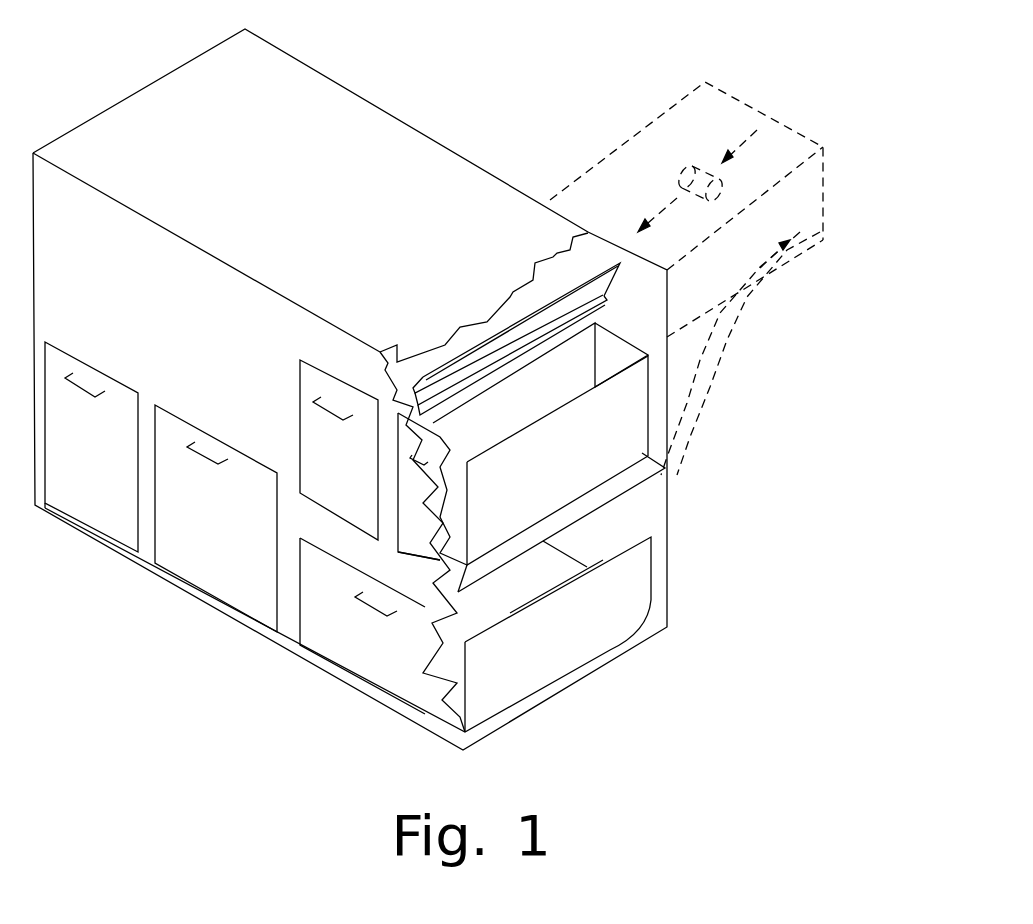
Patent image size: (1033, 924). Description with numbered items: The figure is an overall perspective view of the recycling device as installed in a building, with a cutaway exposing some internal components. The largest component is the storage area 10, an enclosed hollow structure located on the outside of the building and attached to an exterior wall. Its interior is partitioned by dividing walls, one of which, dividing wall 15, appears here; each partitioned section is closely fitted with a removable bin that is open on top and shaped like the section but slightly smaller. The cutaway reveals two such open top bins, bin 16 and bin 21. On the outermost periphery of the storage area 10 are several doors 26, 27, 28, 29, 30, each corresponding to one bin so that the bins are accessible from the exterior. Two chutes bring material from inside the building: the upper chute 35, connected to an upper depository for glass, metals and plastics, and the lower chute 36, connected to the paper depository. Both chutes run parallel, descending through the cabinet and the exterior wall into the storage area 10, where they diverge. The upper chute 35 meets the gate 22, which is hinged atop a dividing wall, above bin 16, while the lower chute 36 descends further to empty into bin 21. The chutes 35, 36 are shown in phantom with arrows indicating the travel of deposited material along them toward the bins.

The storage area 10 is at (267, 145).
The dividing wall 15 is at (638, 472).
The open top bin 16 is at (592, 440).
The open top bin 21 is at (593, 607).
The gate 22 is at (525, 293).
The door 26 is at (430, 521).
The door 27 is at (332, 452).
The door 28 is at (363, 645).
The door 29 is at (202, 535).
The door 30 is at (93, 457).
The upper chute 35 is at (635, 177).
The lower chute 36 is at (743, 317).